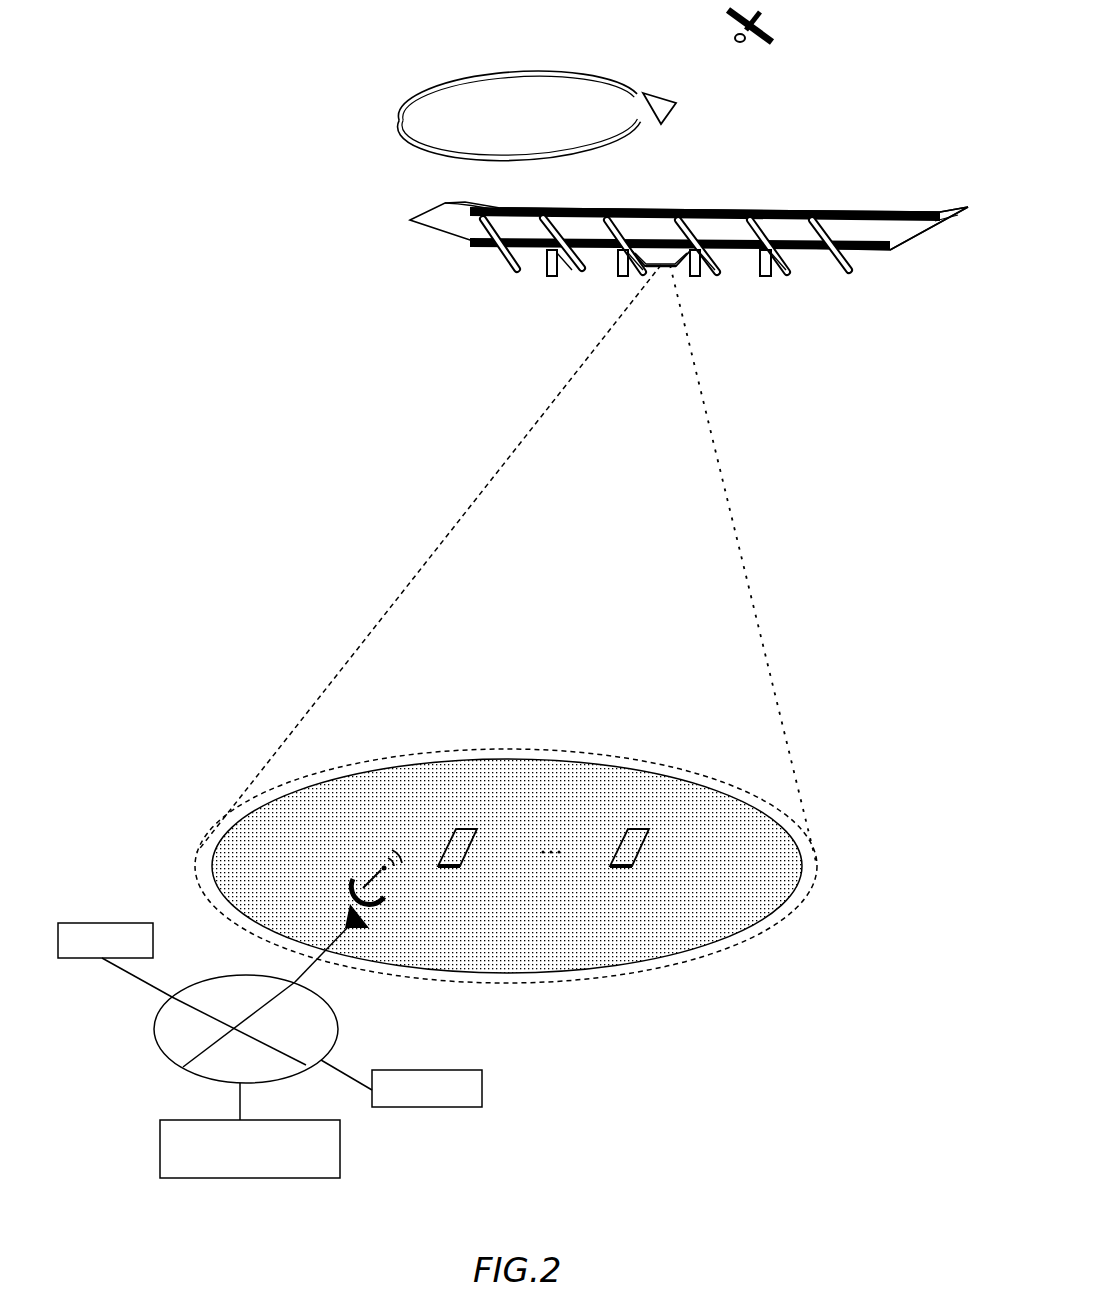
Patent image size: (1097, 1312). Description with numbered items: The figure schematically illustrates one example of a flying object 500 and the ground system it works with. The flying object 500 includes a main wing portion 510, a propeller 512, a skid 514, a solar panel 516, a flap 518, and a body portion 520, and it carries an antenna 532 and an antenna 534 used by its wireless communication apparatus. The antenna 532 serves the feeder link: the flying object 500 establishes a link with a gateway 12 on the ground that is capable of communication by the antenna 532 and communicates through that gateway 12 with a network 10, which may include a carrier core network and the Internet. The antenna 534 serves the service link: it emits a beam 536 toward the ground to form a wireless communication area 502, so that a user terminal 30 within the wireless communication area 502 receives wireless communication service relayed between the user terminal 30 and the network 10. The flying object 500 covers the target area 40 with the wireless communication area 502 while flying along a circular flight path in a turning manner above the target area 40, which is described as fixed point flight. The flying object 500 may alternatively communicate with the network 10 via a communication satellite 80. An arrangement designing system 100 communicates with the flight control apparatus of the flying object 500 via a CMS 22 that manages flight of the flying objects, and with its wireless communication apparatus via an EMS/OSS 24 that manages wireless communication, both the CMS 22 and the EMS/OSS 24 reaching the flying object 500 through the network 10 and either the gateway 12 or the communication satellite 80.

The communication satellite 80 is at (777, 32).
The flying object 500 is at (685, 237).
The main wing portion 510 is at (445, 212).
The propeller 512 is at (506, 254).
The skid 514 is at (548, 262).
The solar panel 516 is at (864, 220).
The flap 518 is at (778, 214).
The body portion 520 is at (683, 267).
The antenna 532 is at (645, 266).
The antenna 534 is at (672, 268).
The beam 536 is at (723, 473).
The target area 40 is at (513, 773).
The wireless communication area 502 is at (603, 763).
The user terminal 30 is at (481, 838).
The gateway 12 is at (346, 918).
The CMS (Constellation Management System) 22 is at (126, 923).
The network 10 is at (225, 976).
The EMS/OSS (Element Management System/Operation Support System) 24 is at (483, 1090).
The arrangement designing system 100 is at (341, 1150).